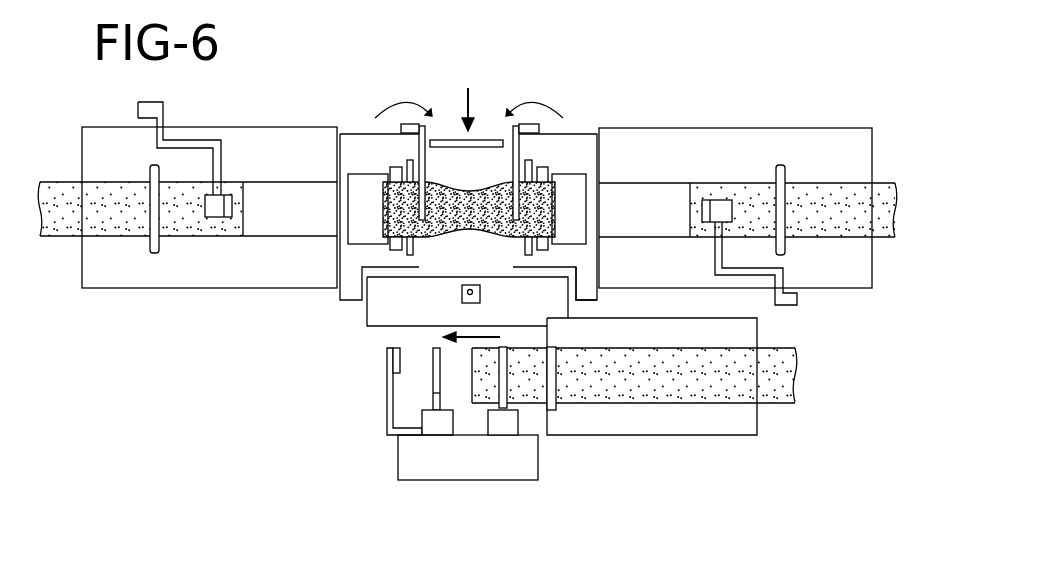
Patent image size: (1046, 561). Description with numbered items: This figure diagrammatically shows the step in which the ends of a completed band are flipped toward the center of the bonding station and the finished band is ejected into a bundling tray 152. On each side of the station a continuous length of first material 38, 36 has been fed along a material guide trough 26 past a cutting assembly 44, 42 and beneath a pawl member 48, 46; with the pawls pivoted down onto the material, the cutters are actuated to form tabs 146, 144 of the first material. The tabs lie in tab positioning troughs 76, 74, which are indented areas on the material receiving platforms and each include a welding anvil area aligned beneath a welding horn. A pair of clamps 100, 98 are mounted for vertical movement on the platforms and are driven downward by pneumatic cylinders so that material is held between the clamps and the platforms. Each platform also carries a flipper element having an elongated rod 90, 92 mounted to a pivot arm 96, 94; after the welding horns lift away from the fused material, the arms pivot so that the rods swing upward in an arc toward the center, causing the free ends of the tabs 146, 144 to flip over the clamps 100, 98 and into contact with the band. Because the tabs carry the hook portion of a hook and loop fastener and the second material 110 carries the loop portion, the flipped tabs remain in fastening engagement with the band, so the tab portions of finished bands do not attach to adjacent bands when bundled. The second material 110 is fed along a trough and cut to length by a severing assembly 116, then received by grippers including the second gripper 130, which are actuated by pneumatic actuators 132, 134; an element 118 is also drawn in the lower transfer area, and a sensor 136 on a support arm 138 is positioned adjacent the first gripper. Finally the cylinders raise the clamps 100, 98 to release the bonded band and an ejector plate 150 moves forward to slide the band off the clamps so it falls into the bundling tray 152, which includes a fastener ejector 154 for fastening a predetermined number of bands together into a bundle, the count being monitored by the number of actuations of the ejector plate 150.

The material guide trough 26 is at (272, 187).
The first material 38 is at (60, 188).
The cutting assembly 44 is at (148, 163).
The pawl member 48 is at (222, 193).
The tab 144 is at (605, 188).
The first material 36 is at (837, 188).
The cutting assembly 42 is at (782, 165).
The pawl member 46 is at (722, 200).
The tab positioning trough 76 is at (347, 248).
The tab 146 is at (340, 219).
The tab positioning trough 74 is at (593, 197).
The elongated rod 90 is at (503, 148).
The clamp 100 is at (402, 166).
The clamp 98 is at (530, 165).
The pivot arm 96 is at (410, 126).
The pivot arm 94 is at (530, 126).
The elongated rod 92 is at (448, 141).
The ejector plate 150 is at (448, 138).
The bundling tray 152 is at (367, 315).
The fastener ejector 154 is at (483, 287).
The bracket 118 is at (407, 433).
The sensor 136 is at (387, 358).
The support arm 138 is at (433, 378).
The pneumatic actuator 132 is at (437, 430).
The pneumatic actuator 134 is at (503, 432).
The second material 110 is at (797, 378).
The second gripper 130 is at (508, 375).
The severing assembly 116 is at (555, 387).